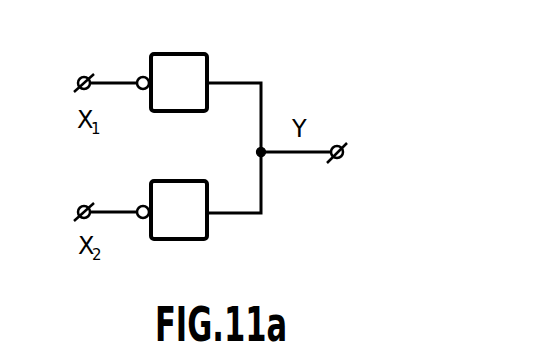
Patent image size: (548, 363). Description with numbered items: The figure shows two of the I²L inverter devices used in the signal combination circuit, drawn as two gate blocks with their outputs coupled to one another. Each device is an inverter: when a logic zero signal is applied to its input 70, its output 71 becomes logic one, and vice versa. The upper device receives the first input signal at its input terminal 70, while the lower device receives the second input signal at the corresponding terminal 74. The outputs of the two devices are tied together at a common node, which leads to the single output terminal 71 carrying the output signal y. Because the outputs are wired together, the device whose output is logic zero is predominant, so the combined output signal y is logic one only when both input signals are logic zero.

The input 70 is at (80, 78).
The second input terminal X2 74 is at (80, 206).
The output 71 is at (342, 158).